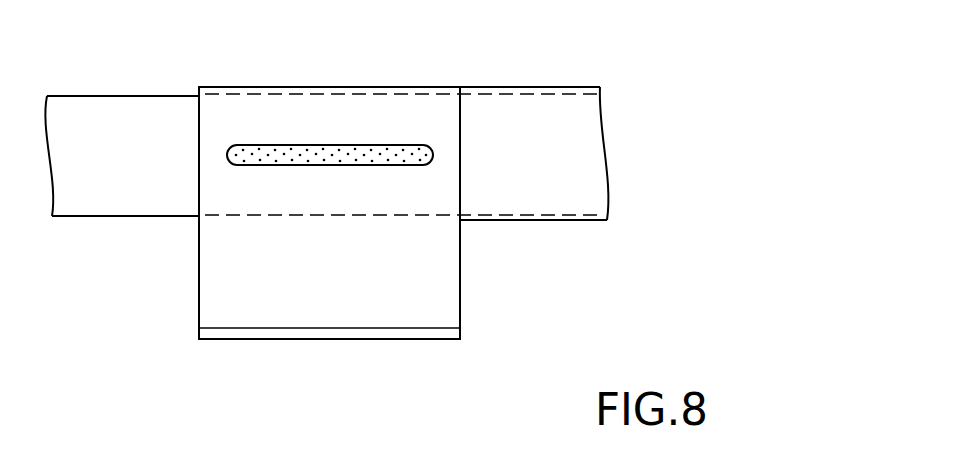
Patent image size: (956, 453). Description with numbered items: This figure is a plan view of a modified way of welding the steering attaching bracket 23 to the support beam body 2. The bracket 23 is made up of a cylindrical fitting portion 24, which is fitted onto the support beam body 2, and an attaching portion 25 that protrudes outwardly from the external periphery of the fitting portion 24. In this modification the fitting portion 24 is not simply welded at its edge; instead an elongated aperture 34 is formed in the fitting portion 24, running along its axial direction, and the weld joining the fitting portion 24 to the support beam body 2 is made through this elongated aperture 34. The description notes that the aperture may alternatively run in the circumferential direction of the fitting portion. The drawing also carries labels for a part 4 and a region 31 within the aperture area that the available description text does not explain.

The support beam body 2 is at (95, 128).
The second tape (strip) 4 is at (557, 128).
The steering attaching bracket 23 is at (420, 229).
The fitting portion 24 is at (435, 185).
The attaching portion 25 is at (433, 282).
The adhesive region 31 is at (370, 150).
The elongated aperture 34 is at (273, 150).